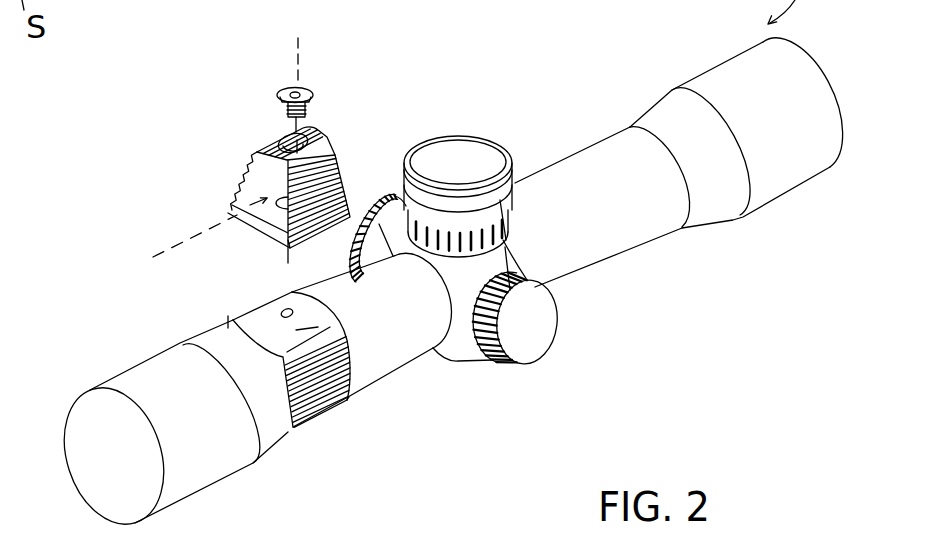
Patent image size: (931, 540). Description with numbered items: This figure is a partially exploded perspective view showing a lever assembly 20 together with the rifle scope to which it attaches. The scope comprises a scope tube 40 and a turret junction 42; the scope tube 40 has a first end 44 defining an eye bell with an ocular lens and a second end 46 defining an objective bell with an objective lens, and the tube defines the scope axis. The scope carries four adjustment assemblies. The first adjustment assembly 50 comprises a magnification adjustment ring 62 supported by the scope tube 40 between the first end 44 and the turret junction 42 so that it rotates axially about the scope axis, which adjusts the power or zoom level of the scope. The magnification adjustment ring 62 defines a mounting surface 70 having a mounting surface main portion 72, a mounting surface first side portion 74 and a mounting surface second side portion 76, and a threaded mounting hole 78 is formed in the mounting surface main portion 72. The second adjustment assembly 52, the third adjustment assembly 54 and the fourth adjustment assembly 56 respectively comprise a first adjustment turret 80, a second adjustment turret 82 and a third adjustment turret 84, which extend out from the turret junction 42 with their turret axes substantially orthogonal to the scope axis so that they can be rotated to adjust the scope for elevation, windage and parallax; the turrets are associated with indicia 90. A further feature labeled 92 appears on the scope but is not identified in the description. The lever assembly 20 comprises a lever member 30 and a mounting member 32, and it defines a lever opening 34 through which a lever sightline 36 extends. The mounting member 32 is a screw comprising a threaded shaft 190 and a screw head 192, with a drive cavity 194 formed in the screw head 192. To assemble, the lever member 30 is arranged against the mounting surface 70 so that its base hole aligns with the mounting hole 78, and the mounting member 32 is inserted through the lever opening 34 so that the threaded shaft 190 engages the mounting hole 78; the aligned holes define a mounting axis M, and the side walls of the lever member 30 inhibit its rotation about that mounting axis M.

The lever assembly 20 is at (144, 144).
The lever member 30 is at (269, 195).
The mounting member 32 is at (296, 66).
The lever opening 34 is at (258, 177).
The lever sightline 36 is at (161, 236).
The scope tube 40 is at (504, 262).
The turret junction 42 is at (453, 324).
The first end 44 is at (150, 428).
The second end 46 is at (749, 133).
The first adjustment assembly 50 is at (275, 398).
The second adjustment assembly 52 is at (490, 171).
The third adjustment assembly 54 is at (380, 200).
The fourth adjustment assembly 56 is at (541, 339).
The magnification adjustment ring 62 is at (206, 299).
The mounting surface 70 is at (290, 294).
The mounting surface main portion 72 is at (307, 319).
The mounting surface first side portion 74 is at (345, 338).
The mounting surface second side portion 76 is at (227, 323).
The mounting hole 78 is at (281, 315).
The first adjustment turret 80 is at (470, 143).
The second adjustment turret 82 is at (396, 198).
The third adjustment turret 84 is at (532, 341).
The indicia 90 is at (497, 243).
The knurled grip 92 is at (304, 488).
The threaded shaft 190 is at (287, 113).
The screw head 192 is at (292, 90).
The drive cavity 194 is at (295, 90).
The mounting axis M is at (300, 42).